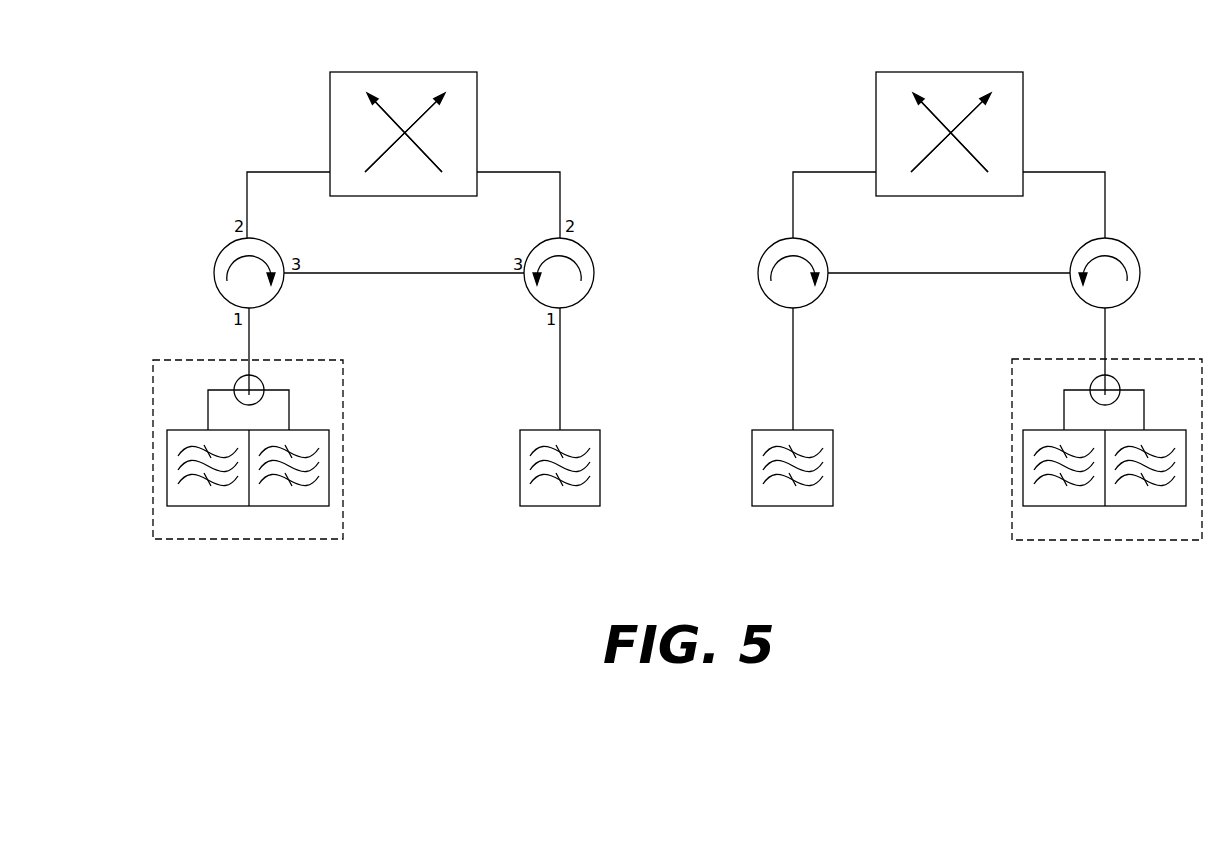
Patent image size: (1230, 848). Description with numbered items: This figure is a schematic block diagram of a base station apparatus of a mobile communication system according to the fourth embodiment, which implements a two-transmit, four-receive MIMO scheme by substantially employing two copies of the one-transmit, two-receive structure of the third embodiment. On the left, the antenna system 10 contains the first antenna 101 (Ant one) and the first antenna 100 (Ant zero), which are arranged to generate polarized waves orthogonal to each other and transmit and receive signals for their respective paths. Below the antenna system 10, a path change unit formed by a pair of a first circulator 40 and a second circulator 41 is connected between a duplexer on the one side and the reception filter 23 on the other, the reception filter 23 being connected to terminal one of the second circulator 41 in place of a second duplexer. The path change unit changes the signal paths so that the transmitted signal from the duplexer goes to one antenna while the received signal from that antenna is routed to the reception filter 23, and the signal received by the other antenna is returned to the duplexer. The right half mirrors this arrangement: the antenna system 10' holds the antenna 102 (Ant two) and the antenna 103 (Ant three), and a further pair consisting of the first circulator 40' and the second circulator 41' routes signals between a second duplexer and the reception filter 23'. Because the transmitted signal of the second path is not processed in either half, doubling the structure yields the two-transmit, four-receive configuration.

The antenna system 10 is at (403, 114).
The antenna system 10' is at (949, 114).
The first antenna (Ant0) 100 is at (445, 95).
The second antenna (Ant1) 101 is at (368, 95).
The antenna (Ant2) 102 is at (913, 95).
The antenna (Ant3) 103 is at (990, 95).
The reception filter 23 is at (585, 482).
The reception filter 23' is at (765, 482).
The first circulator 40 is at (223, 273).
The first circulator 40' is at (1131, 273).
The second circulator 41 is at (586, 273).
The second circulator 41' is at (767, 273).